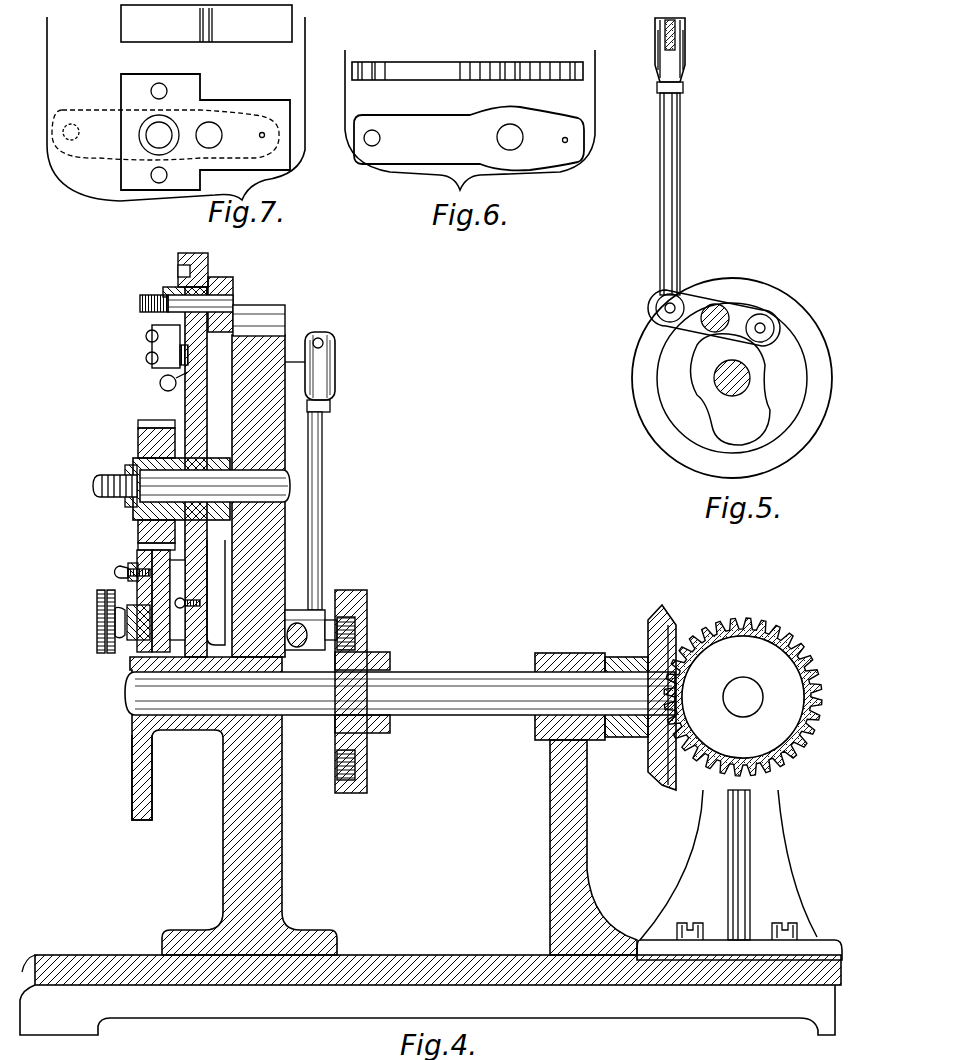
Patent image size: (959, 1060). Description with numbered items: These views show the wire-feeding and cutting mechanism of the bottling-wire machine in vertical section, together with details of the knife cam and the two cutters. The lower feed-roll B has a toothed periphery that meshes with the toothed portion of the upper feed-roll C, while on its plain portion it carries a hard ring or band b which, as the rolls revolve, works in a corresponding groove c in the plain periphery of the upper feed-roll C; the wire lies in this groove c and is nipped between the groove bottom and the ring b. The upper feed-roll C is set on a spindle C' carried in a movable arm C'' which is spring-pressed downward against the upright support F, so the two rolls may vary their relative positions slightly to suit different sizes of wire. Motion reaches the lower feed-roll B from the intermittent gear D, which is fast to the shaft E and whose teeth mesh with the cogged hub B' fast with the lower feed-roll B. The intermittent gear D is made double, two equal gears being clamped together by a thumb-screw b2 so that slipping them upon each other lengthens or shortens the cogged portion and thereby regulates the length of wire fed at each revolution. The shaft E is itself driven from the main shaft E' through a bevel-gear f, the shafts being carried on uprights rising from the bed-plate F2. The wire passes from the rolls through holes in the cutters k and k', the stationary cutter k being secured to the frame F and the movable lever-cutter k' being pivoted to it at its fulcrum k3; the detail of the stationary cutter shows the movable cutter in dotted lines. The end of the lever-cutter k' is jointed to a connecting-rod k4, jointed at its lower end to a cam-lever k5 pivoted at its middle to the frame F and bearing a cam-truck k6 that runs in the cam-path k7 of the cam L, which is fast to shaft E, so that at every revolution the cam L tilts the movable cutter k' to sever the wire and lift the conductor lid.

In FIG. 7, the stationary cutter k is at (172, 97).
In FIG. 5, the stationary cutter k is at (731, 389).
In FIG. 4, the stationary cutter k is at (145, 350).
In FIG. 6, the movable lever-cutter k' is at (468, 114).
In FIG. 5, the movable lever-cutter k' is at (683, 55).
In FIG. 4, the movable lever-cutter k' is at (284, 358).
In FIG. 7, the fulcrum k3 is at (209, 135).
In FIG. 6, the fulcrum k3 is at (510, 137).
In FIG. 5, the fulcrum k3 is at (715, 318).
In FIG. 5, the connecting-rod k4 is at (680, 203).
In FIG. 4, the connecting-rod k4 is at (322, 462).
In FIG. 5, the cam-lever k5 is at (715, 318).
In FIG. 4, the cam-lever k5 is at (311, 637).
In FIG. 5, the cam-truck k6 is at (775, 330).
In FIG. 5, the cam-path k7 is at (732, 378).
In FIG. 4, the cam-path k7 is at (350, 770).
In FIG. 4, the groove c is at (150, 345).
In FIG. 4, the upper feed-roll C is at (196, 275).
In FIG. 4, the spindle C' is at (205, 293).
In FIG. 4, the movable arm C'' is at (242, 291).
In FIG. 4, the ring or band b is at (182, 618).
In FIG. 4, the thumb-screw b2 is at (95, 625).
In FIG. 4, the lower feed-roll B is at (181, 472).
In FIG. 4, the cogged hub B' is at (132, 485).
In FIG. 4, the upright support F is at (233, 645).
In FIG. 4, the bed-plate F2 is at (430, 995).
In FIG. 4, the intermittent gear D is at (128, 774).
In FIG. 4, the shaft E is at (400, 707).
In FIG. 4, the main shaft E' is at (743, 697).
In FIG. 5, the cam L is at (714, 314).
In FIG. 4, the cam L is at (368, 652).
In FIG. 4, the bevel-gear f is at (760, 660).